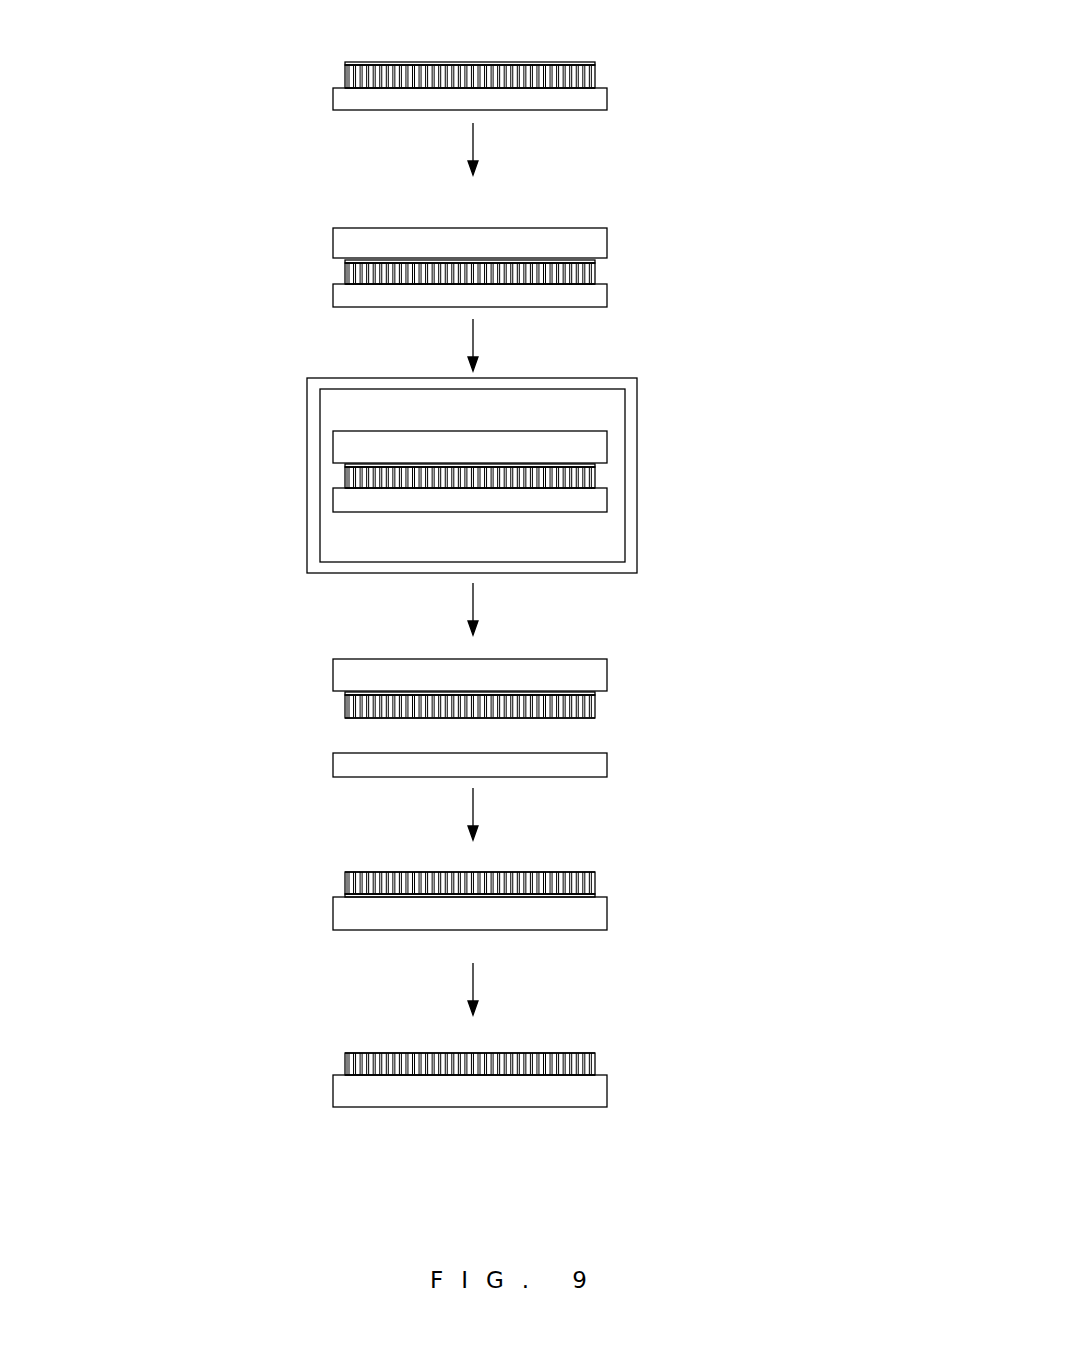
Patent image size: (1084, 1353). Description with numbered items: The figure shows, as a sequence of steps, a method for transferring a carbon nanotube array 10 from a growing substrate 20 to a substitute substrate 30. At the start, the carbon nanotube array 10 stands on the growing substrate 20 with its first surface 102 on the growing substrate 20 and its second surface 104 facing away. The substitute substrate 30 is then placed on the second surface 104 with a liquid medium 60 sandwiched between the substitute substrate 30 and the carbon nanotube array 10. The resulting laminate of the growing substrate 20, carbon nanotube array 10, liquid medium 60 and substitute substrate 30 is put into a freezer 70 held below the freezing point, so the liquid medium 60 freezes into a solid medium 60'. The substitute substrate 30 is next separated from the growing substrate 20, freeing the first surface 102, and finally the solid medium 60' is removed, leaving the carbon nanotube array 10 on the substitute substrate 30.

The carbon nanotube array 10 is at (588, 78).
The growing substrate 20 is at (587, 100).
The substitute substrate 30 is at (577, 237).
The liquid medium 60 is at (477, 135).
The solid medium 60' is at (528, 672).
The freezer 70 is at (630, 542).
The first surface 102 is at (363, 88).
The second surface 104 is at (358, 63).